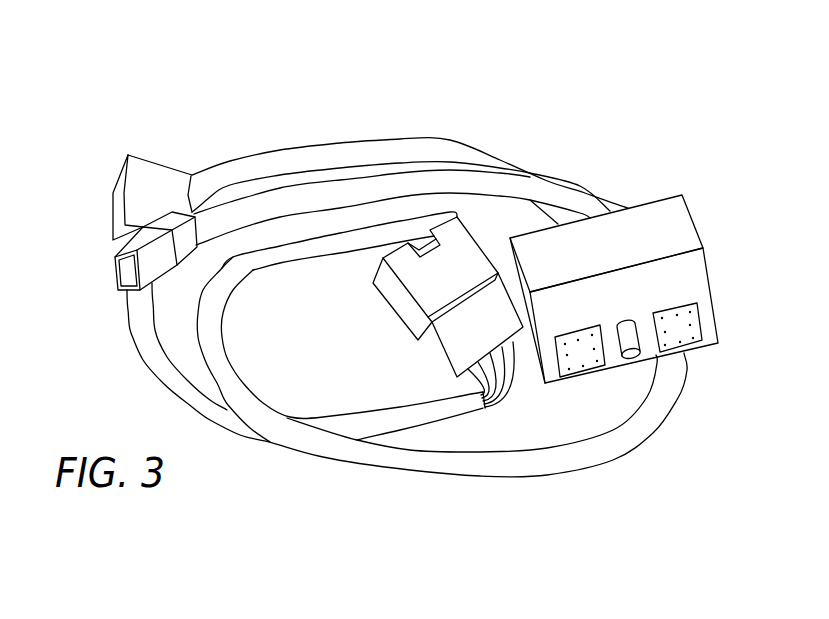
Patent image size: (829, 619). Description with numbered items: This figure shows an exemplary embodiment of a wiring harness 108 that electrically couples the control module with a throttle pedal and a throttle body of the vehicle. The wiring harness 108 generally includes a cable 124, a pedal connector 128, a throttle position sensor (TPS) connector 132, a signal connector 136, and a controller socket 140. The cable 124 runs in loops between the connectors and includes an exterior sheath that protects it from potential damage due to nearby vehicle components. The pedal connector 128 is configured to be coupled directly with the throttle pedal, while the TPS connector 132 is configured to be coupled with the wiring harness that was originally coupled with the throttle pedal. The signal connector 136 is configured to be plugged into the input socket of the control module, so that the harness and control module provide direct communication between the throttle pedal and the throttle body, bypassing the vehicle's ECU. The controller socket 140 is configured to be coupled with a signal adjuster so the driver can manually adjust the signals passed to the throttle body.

The wiring harness 108 is at (537, 70).
The cable 124 is at (448, 463).
The pedal connector 128 is at (398, 300).
The throttle position sensor (TPS) connector 132 is at (113, 197).
The signal connector 136 is at (662, 215).
The controller socket 140 is at (115, 262).